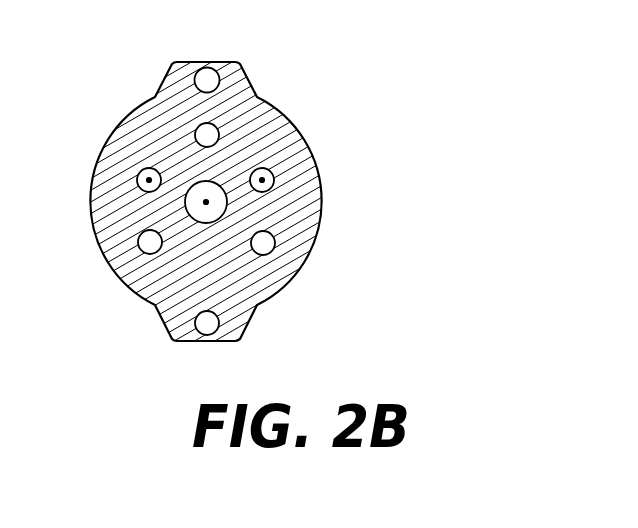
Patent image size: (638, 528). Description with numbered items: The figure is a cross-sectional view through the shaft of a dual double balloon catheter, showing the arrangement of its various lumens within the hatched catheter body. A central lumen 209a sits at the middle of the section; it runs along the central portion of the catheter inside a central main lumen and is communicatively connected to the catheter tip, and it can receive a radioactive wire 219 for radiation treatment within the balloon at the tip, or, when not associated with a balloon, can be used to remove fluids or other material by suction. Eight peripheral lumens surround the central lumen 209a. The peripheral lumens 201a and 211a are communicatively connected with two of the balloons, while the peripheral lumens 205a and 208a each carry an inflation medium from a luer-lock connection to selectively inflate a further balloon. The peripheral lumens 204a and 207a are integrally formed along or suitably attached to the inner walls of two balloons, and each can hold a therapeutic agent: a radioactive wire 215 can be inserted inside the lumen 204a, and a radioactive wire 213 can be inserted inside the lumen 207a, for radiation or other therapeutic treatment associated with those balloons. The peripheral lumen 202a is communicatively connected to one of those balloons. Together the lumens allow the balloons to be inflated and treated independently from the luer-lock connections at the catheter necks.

The peripheral lumen 201a is at (205, 325).
The peripheral lumen 202a is at (147, 241).
The lumen 204a is at (138, 189).
The lumen 205a is at (207, 78).
The lumen 207a is at (273, 186).
The lumen 208a is at (264, 247).
The central lumen 209a is at (222, 203).
The peripheral lumen 211a is at (211, 131).
The radioactive wire 213 is at (262, 180).
The radioactive wire 215 is at (147, 180).
The radioactive wire 219 is at (206, 202).